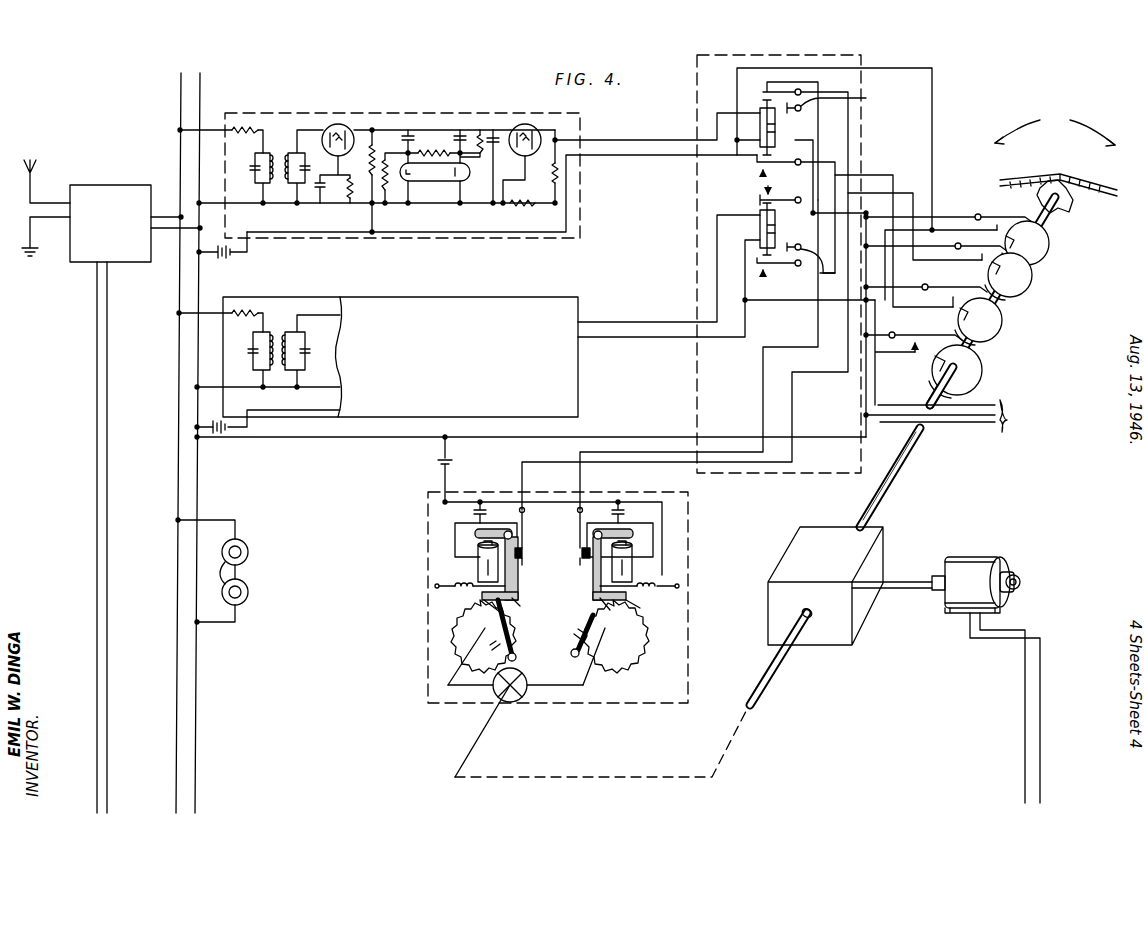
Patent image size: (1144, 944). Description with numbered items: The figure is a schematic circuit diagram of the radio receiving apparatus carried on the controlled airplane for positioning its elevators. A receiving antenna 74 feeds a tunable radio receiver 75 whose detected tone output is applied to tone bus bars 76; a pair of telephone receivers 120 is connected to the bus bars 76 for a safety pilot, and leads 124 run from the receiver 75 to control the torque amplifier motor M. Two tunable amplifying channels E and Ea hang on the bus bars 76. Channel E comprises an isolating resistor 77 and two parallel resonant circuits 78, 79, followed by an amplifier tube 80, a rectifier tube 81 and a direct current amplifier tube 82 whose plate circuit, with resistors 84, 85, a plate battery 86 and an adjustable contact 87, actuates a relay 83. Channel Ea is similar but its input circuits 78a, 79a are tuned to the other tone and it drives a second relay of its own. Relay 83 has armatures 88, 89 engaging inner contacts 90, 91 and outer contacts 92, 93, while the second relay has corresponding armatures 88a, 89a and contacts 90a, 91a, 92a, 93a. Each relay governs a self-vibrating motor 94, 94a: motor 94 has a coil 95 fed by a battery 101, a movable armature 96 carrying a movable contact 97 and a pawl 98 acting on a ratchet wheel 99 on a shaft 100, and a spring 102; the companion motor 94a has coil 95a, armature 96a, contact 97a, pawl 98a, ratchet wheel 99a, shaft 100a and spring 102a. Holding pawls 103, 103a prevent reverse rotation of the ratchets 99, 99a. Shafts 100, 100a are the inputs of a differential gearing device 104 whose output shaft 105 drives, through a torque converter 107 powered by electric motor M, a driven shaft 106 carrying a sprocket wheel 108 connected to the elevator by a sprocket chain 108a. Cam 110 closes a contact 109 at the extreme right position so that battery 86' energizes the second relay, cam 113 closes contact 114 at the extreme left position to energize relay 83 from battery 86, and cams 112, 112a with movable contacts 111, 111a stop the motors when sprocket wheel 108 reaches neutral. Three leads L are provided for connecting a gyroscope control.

The receiving antenna 74 is at (30, 179).
The tunable radio receiver 75 is at (122, 185).
The tone bus bars 76 is at (180, 103).
The isolating resistor 77 is at (248, 130).
The parallel resonant circuit 78 is at (255, 158).
The parallel resonant circuit 79 is at (292, 138).
The amplifier tube 80 is at (335, 124).
The rectifier tube 81 is at (444, 180).
The direct current amplifier tube 82 is at (532, 122).
The relay 83 is at (778, 127).
The resistor 84 is at (542, 173).
The resistor 85 is at (530, 208).
The plate battery 86 is at (222, 255).
The battery 86' is at (273, 433).
The adjustable contact 87 is at (568, 174).
The armature 88 is at (758, 96).
The armature 88a is at (756, 201).
The armature 89 is at (750, 162).
The armature 89a is at (758, 263).
The inner contact 90 is at (838, 101).
The inner contact 90a is at (818, 274).
The inner contact 91 is at (792, 152).
The inner contact 91a is at (786, 234).
The outer contact 92 is at (785, 84).
The outer contact 92a is at (762, 276).
The outer contact 93 is at (762, 175).
The outer contact 93a is at (768, 188).
The self-vibrating motor 94 is at (675, 540).
The self-vibrating motor 94a is at (452, 558).
The coil 95 is at (624, 567).
The coil 95a is at (477, 567).
The movable armature 96 is at (624, 526).
The movable armature 96a is at (475, 530).
The movable contact 97 is at (582, 536).
The movable contact 97a is at (525, 554).
The pawl 98 is at (634, 600).
The pawl 98a is at (505, 599).
The ratchet wheel 99 is at (640, 645).
The ratchet wheel 99a is at (455, 630).
The shaft 100 is at (598, 668).
The shaft 100a is at (447, 682).
The battery 101 is at (430, 466).
The spring 102 is at (666, 582).
The spring 102a is at (452, 588).
The holding pawl 103 is at (584, 626).
The holding pawl 103a is at (508, 637).
The differential gearing device 104 is at (518, 704).
The output shaft 105 is at (470, 742).
The driven shaft 106 is at (886, 490).
The torque converter 107 is at (854, 624).
The driven sprocket wheel 108 is at (1068, 212).
The sprocket chain 108a is at (1088, 174).
The contact 109 is at (940, 335).
The cam 110 is at (932, 376).
The movable contact 111 is at (978, 250).
The movable contact 111a is at (950, 292).
The cam 112 is at (1023, 292).
The cam 112a is at (998, 328).
The cam 113 is at (1046, 260).
The contact 114 is at (1020, 216).
The telephone receivers 120 is at (244, 544).
The leads 124 is at (107, 755).
The input resonant circuit 78a is at (260, 335).
The input resonant circuit 79a is at (300, 338).
The tunable amplifying channel E is at (302, 112).
The tunable amplifying channel Ea is at (321, 297).
The leads L is at (1010, 414).
The electric motor M is at (999, 557).